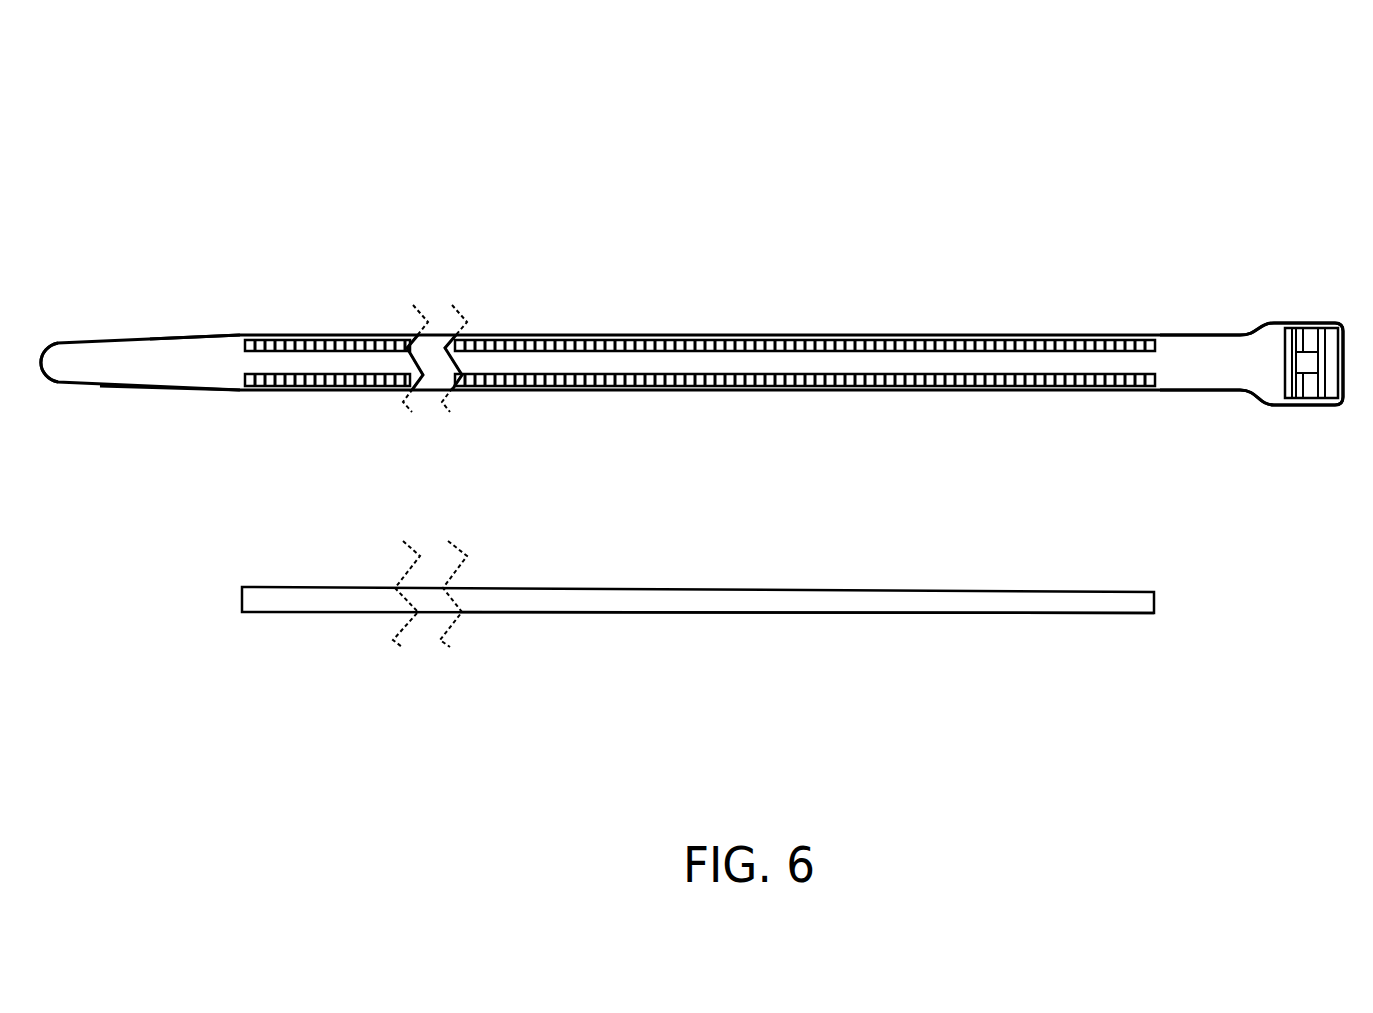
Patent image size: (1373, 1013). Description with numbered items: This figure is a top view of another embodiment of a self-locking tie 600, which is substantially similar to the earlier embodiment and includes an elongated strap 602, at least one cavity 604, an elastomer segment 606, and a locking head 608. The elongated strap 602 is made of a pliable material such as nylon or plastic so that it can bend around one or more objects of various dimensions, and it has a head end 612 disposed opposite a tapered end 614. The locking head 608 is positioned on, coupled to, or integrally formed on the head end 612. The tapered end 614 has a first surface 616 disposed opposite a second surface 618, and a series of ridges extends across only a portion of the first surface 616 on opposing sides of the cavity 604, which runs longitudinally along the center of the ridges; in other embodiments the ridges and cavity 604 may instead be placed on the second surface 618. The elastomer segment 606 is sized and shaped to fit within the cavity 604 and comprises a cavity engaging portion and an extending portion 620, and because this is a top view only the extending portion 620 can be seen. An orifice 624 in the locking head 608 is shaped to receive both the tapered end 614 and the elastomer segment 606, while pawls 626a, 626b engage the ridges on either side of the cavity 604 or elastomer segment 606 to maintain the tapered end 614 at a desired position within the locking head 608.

The self-locking tie 600 is at (333, 126).
The elongated strap 602 is at (775, 337).
The cavity 604 is at (900, 360).
The elastomer segment 606 is at (635, 598).
The locking head 608 is at (1270, 330).
The head end 612 is at (1227, 345).
The tapered end 614 is at (145, 355).
The first surface 616 is at (225, 343).
The second surface 618 is at (167, 397).
The extending portion 620 is at (793, 598).
The orifice 624 is at (1330, 398).
The pawl 626a is at (1307, 350).
The pawl 626b is at (1300, 395).